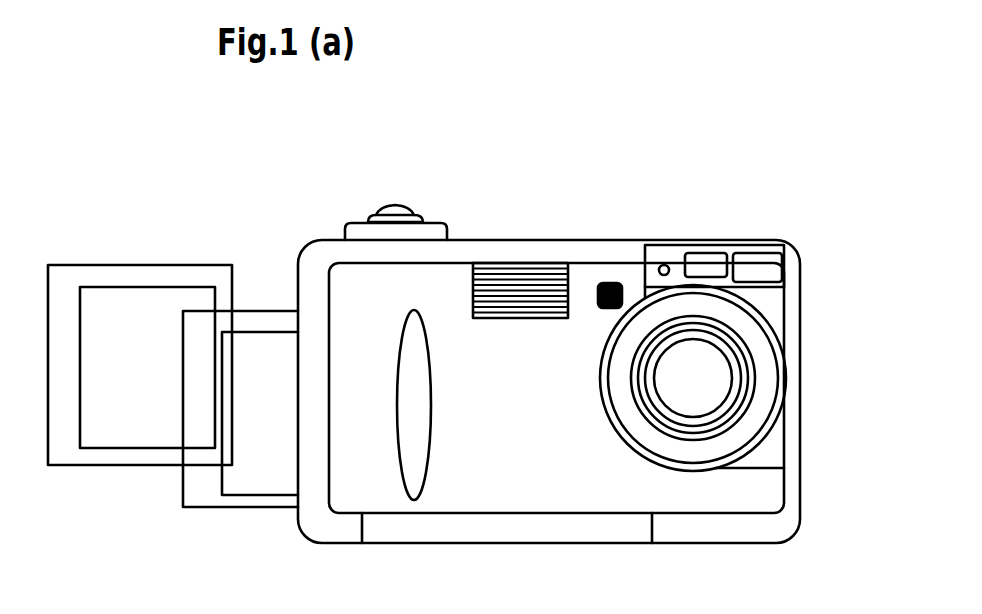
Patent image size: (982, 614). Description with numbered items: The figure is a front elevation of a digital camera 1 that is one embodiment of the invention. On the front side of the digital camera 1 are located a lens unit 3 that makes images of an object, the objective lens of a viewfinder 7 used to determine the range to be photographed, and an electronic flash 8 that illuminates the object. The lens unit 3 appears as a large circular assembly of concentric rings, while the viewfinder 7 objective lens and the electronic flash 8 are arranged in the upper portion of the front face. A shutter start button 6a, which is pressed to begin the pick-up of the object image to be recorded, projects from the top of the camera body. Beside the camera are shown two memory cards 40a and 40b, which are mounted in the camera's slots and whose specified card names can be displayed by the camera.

The digital camera 1 is at (915, 177).
The lens unit 3 is at (722, 378).
The shutter start button 6a is at (388, 208).
The viewfinder 7 is at (763, 272).
The electronic flash 8 is at (570, 282).
The memory card 40a is at (248, 507).
The memory card 40b is at (120, 467).